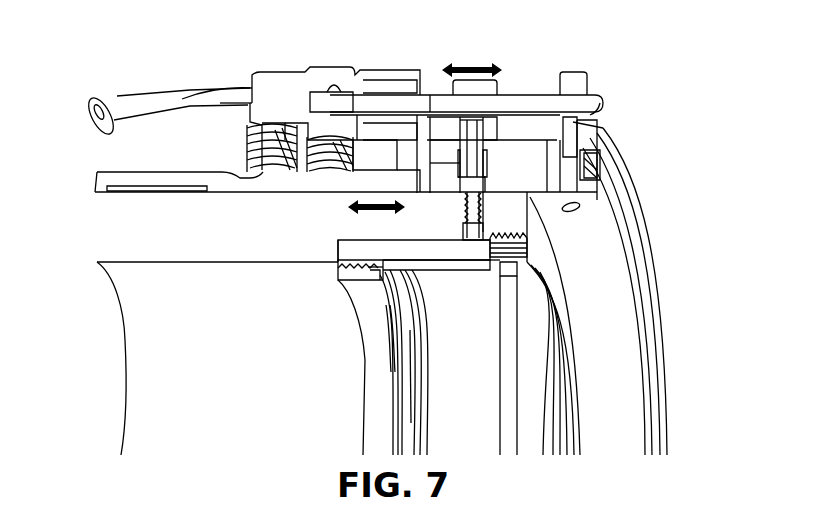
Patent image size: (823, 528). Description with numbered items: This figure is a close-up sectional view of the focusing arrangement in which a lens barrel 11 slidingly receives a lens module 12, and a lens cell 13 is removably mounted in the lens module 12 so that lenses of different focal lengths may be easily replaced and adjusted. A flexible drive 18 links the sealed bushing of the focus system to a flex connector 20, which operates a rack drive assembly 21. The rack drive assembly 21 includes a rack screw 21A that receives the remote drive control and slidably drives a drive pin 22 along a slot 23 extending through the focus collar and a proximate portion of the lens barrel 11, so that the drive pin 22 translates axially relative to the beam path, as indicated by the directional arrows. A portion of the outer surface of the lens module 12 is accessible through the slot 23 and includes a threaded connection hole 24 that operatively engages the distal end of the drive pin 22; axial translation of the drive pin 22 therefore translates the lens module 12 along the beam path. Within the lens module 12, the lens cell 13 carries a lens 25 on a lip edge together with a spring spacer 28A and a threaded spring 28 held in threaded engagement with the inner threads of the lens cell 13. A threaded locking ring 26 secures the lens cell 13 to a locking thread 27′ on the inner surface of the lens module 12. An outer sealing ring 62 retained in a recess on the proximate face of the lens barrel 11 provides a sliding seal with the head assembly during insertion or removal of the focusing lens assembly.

The flexible drive 18 is at (127, 92).
The flex connector 20 is at (252, 91).
The rack drive assembly 21 is at (557, 61).
The rack screw 21A is at (437, 88).
The drive pin 22 is at (498, 127).
The outer sealing ring 62 is at (603, 163).
The lens barrel 11 is at (93, 183).
The lens module 12 is at (113, 240).
The lens cell 13 is at (355, 232).
The threaded connection hole 24 is at (462, 207).
The slot 23 is at (519, 193).
The threaded locking ring 26 is at (534, 246).
The locking thread 27′ is at (490, 243).
The spring spacer 28A is at (423, 350).
The threaded spring 28 is at (356, 430).
The lens 25 is at (496, 377).